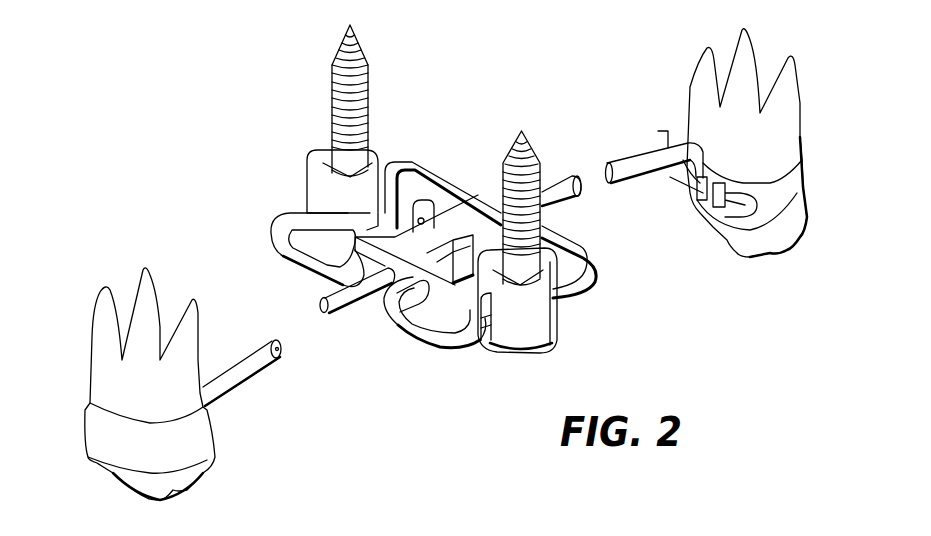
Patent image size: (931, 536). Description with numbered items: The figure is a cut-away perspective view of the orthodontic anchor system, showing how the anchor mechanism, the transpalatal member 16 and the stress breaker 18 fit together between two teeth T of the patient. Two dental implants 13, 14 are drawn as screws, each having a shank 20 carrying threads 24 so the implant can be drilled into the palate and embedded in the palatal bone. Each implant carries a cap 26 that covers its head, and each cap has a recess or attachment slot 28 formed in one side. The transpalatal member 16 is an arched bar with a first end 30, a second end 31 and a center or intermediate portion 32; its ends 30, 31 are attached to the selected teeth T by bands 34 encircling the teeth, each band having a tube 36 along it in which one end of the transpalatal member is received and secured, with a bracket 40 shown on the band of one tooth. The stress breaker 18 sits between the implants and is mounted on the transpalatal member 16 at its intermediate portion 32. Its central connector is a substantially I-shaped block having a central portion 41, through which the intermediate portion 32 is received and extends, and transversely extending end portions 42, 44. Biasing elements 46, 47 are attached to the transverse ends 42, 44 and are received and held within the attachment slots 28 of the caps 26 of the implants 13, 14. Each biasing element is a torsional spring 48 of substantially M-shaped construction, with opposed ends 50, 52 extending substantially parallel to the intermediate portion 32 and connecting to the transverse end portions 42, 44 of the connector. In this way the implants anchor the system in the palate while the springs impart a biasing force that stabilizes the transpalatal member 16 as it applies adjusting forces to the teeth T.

The dental implant 13 is at (557, 327).
The dental implant 14 is at (305, 190).
The transpalatal member 16 is at (563, 184).
The stress breaker 18 is at (390, 322).
The shank 20 is at (333, 148).
The threads 24 is at (500, 167).
The cap 26 is at (308, 157).
The attachment slot 28 is at (503, 322).
The first end 30 is at (680, 143).
The second end 31 is at (217, 377).
The intermediate portion 32 is at (340, 285).
The band 34 is at (83, 433).
The tube 36 is at (733, 237).
The bracket 40 is at (797, 237).
The central portion 41 is at (432, 222).
The transverse end portion 42 is at (368, 230).
The transverse end portion 44 is at (462, 200).
The biasing element 46 is at (437, 347).
The biasing element 47 is at (277, 236).
The torsional spring 48 is at (381, 153).
The end 50 is at (490, 342).
The end 52 is at (389, 228).
The tooth T is at (90, 368).